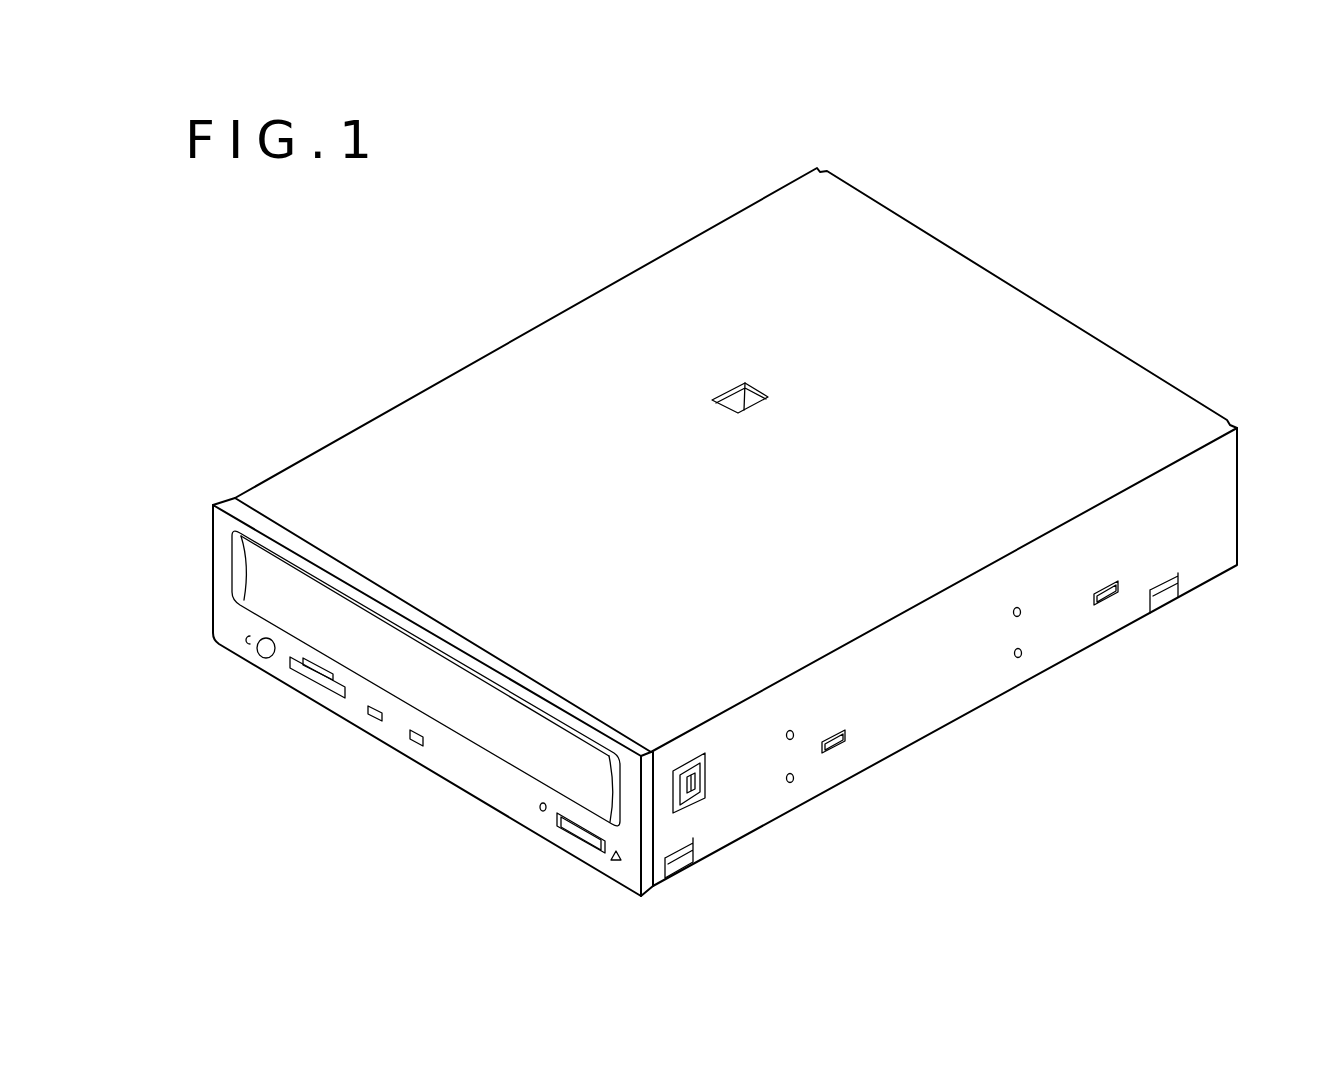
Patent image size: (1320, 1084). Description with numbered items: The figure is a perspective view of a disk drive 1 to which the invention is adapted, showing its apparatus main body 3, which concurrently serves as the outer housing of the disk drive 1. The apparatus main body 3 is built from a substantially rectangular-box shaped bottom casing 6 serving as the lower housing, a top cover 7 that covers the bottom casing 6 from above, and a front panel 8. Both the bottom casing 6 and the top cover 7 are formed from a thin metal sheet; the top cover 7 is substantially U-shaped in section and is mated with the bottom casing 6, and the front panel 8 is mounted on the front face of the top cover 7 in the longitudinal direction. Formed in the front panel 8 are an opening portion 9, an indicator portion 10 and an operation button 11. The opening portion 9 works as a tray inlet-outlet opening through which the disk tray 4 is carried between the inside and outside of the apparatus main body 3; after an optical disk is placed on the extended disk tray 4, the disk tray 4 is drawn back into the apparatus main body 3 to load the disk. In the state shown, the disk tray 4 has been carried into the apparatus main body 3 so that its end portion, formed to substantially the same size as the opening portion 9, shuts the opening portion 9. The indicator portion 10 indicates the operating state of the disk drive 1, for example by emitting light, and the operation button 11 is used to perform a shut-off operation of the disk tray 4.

The disk drive 1 is at (410, 373).
The apparatus main body 3 is at (537, 347).
The disk tray 4 is at (413, 685).
The bottom casing 6 is at (723, 847).
The top cover 7 is at (857, 692).
The front panel 8 is at (633, 875).
The opening portion 9 is at (240, 602).
The indicator portion 10 is at (325, 683).
The operation button 11 is at (580, 837).